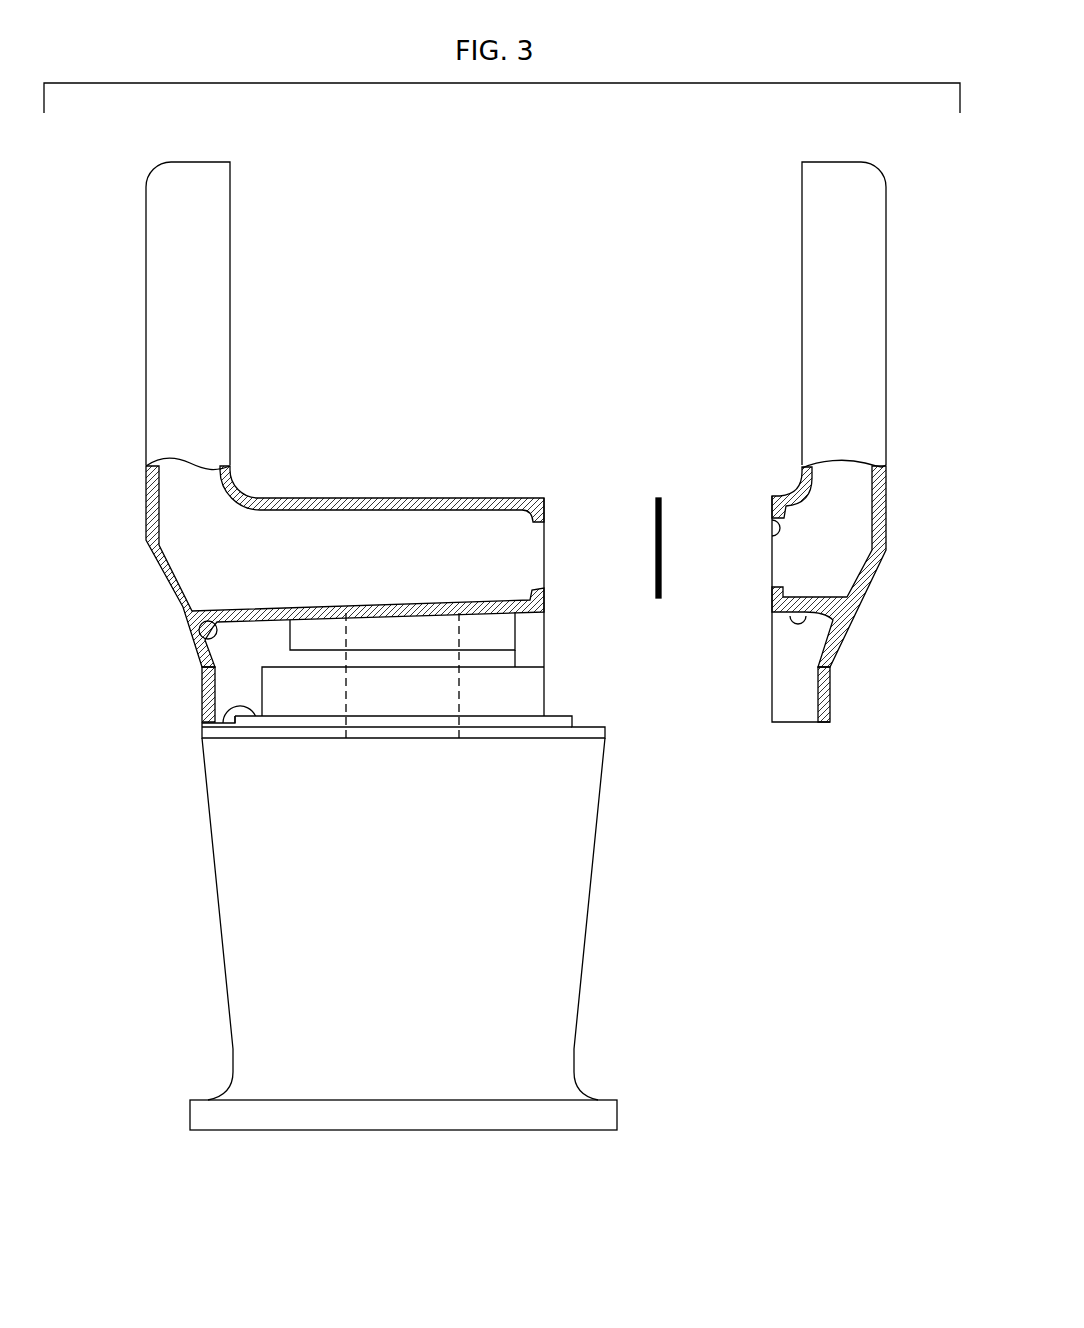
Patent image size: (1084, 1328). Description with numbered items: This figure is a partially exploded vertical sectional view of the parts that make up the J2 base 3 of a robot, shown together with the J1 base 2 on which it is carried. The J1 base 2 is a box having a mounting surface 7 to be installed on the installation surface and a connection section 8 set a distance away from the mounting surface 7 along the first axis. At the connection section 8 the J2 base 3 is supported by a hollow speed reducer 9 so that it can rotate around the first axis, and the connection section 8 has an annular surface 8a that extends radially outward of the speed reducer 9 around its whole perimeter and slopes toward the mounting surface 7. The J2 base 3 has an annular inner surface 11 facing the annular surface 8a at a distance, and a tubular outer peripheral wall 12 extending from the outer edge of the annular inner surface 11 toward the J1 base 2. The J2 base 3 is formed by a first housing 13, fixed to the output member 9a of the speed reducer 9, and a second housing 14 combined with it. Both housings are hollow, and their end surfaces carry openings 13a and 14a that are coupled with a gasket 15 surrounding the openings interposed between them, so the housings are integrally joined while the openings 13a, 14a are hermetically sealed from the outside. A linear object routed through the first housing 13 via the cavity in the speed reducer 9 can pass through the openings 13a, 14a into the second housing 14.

The J1 base 2 is at (194, 906).
The J2 base 3 is at (129, 358).
The mounting surface 7 is at (376, 1131).
The connection section 8 is at (606, 731).
The annular surface 8a is at (240, 712).
The speed reducer 9 is at (505, 723).
The output member 9a is at (290, 640).
The annular inner surface 11 is at (200, 630).
The tubular outer peripheral wall 12 is at (203, 700).
The first housing 13 is at (129, 505).
The opening 13a is at (546, 538).
The second housing 14 is at (901, 496).
The opening 14a is at (771, 537).
The gasket 15 is at (658, 495).